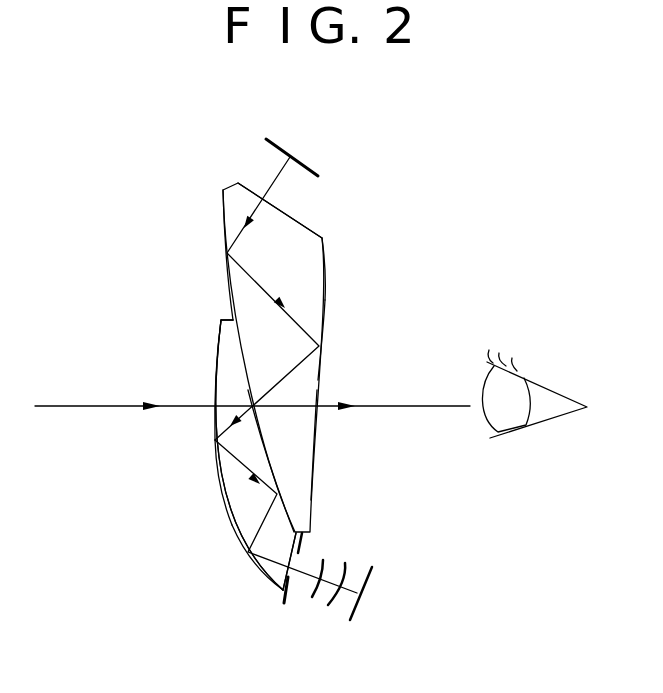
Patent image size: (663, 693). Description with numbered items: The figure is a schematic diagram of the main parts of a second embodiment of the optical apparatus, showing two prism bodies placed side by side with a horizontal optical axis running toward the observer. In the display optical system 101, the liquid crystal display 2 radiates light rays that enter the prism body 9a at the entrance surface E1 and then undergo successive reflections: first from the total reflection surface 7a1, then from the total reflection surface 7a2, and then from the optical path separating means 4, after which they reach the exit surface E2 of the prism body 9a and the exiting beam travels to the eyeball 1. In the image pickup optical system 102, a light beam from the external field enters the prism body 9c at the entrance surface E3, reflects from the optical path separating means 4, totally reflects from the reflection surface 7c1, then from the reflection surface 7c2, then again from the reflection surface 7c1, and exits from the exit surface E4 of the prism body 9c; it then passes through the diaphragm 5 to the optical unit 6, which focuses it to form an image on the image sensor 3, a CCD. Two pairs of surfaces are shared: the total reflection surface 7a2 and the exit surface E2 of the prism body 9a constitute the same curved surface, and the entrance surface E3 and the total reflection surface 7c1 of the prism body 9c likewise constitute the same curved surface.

The eyeball 1 is at (538, 425).
The liquid crystal display 2 is at (318, 172).
The image sensor 3 is at (370, 580).
The optical path separating means 4 is at (240, 362).
The diaphragm 5 is at (290, 600).
The optical unit 6 is at (333, 560).
The total reflection surface 7a1 is at (222, 225).
The total reflection surface 7a2 is at (325, 303).
The reflection surface 7c1 is at (230, 523).
The reflection surface 7c2 is at (287, 507).
The prism body 9a is at (315, 260).
The prism body 9c is at (227, 485).
The display optical system 101 is at (322, 220).
The image pickup optical system 102 is at (193, 518).
The entrance surface E1 is at (252, 190).
The exit surface E2 is at (315, 435).
The entrance surface E3 is at (215, 417).
The exit surface E4 is at (300, 555).